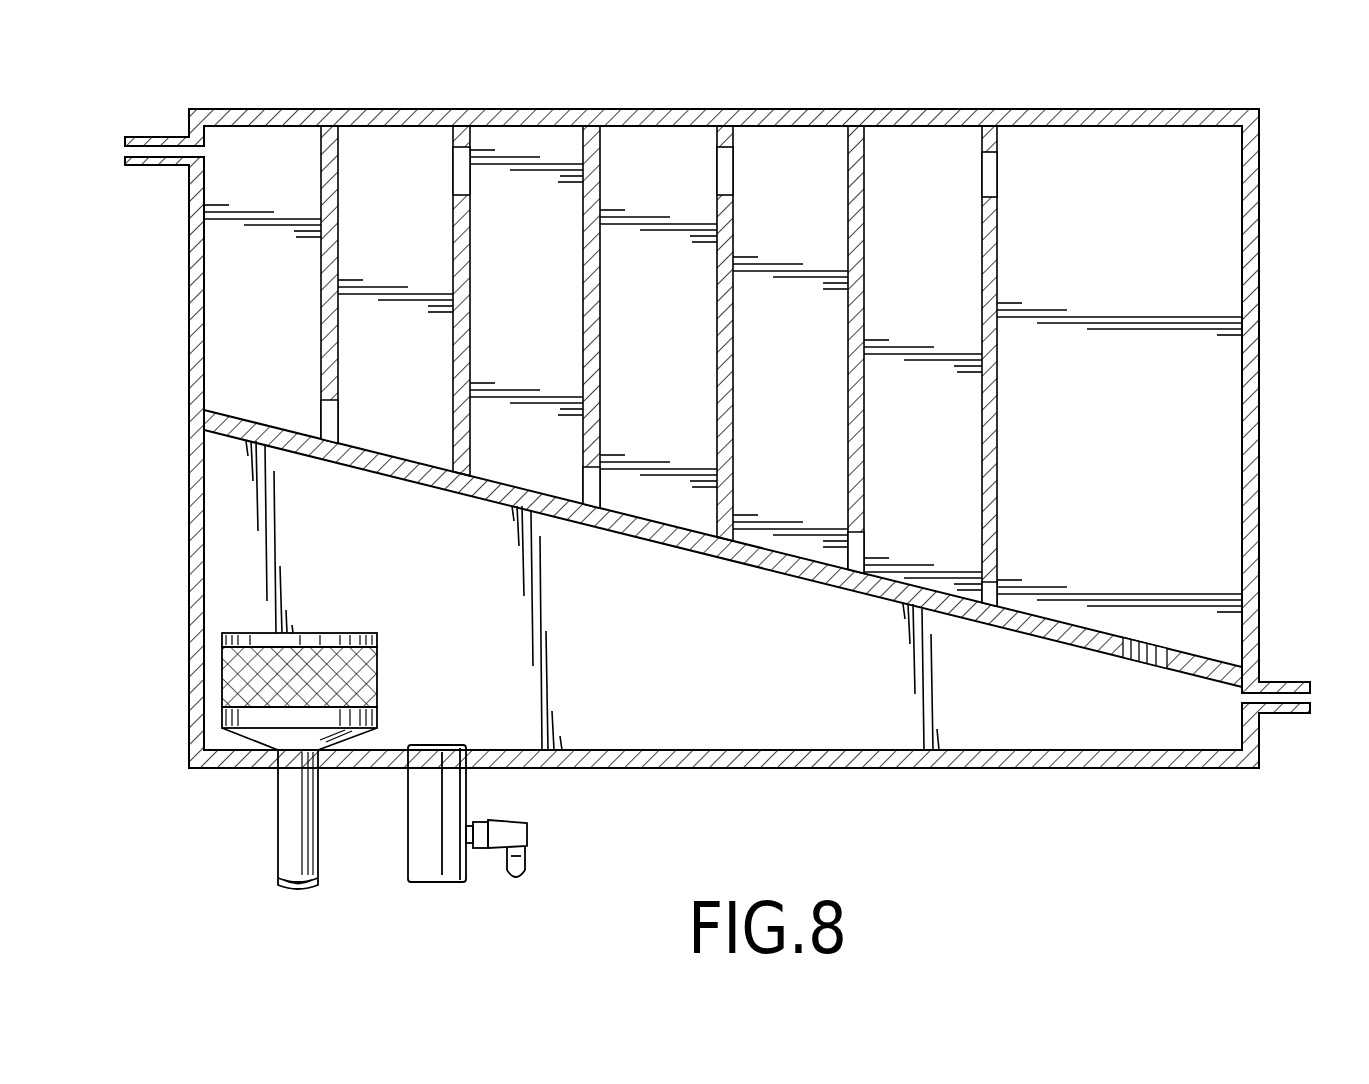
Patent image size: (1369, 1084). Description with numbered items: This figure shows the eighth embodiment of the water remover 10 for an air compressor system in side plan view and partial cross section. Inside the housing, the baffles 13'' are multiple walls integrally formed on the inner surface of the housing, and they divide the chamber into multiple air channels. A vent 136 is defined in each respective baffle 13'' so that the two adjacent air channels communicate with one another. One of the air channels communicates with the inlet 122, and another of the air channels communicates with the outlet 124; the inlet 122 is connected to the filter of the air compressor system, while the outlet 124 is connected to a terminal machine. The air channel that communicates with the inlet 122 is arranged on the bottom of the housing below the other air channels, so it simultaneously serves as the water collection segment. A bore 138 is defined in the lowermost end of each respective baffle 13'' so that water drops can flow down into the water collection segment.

The water remover 10 is at (736, 487).
The outlet 124 is at (150, 152).
The inlet 122 is at (1292, 695).
The vent 136 is at (993, 177).
The baffles 13'' is at (1032, 366).
The bore 138 is at (995, 598).